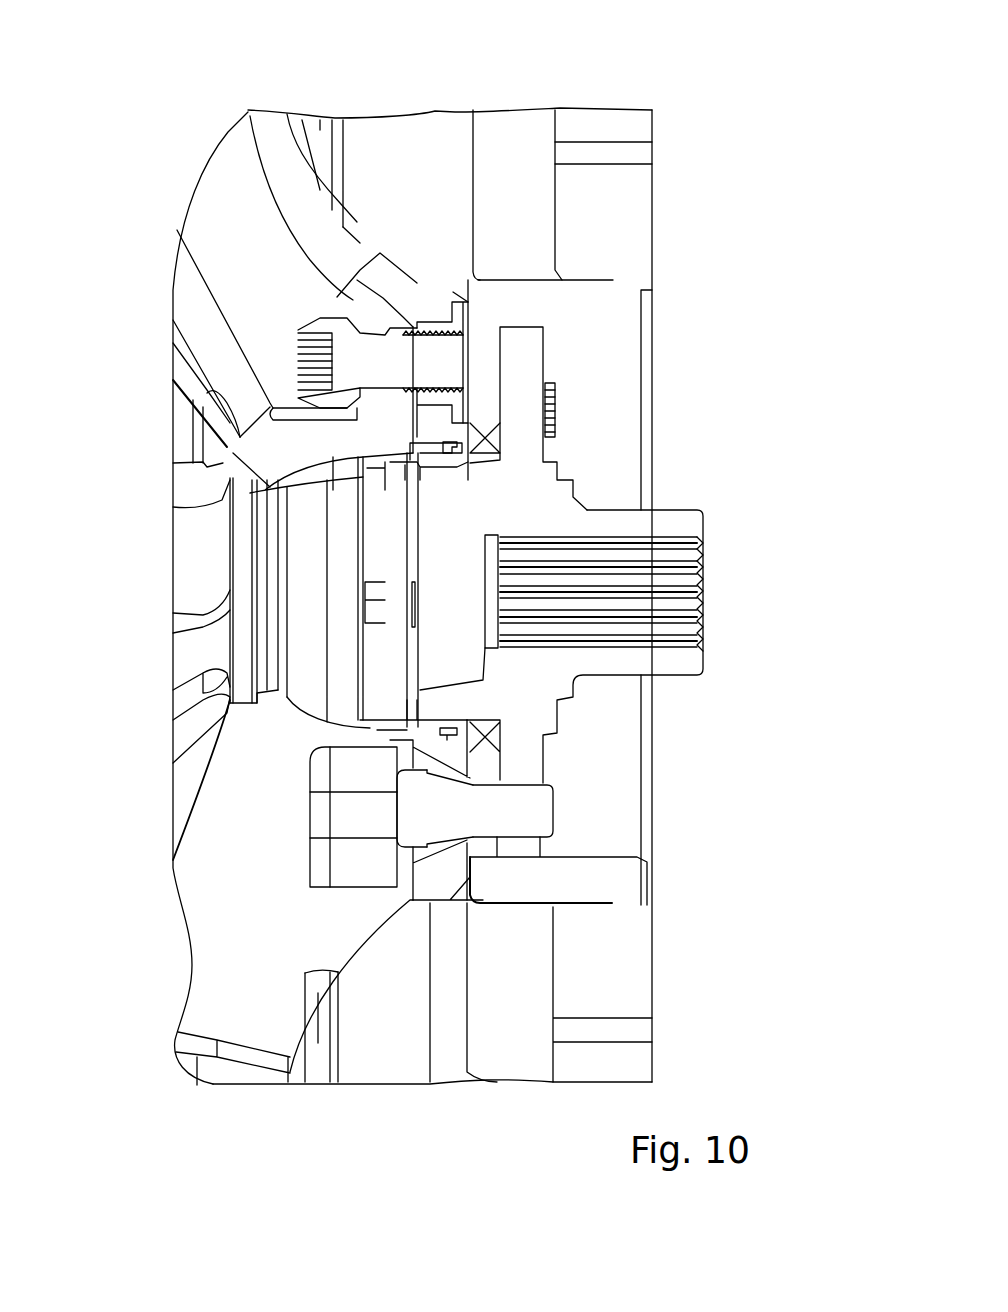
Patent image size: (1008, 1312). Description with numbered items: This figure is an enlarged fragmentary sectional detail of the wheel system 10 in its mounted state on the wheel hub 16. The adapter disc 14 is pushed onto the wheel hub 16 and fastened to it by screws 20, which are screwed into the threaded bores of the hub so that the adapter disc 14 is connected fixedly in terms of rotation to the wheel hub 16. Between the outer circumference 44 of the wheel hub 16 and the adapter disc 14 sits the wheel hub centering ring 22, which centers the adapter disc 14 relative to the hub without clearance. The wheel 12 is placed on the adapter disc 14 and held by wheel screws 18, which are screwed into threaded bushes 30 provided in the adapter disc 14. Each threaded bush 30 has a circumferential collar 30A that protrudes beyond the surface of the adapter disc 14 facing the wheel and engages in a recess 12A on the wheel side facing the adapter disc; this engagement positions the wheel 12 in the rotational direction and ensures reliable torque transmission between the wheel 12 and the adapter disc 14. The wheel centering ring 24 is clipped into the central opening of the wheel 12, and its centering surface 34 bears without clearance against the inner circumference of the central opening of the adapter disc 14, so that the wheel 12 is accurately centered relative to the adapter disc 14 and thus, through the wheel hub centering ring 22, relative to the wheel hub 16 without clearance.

The wheel system 10 is at (604, 92).
The wheel 12 is at (373, 117).
The recess 12A is at (410, 327).
The adapter disc 14 is at (453, 292).
The wheel hub 16 is at (687, 520).
The wheel screw 18 is at (325, 318).
The screw 20 is at (443, 817).
The wheel hub centering ring 22 is at (468, 455).
The wheel centering ring 24 is at (372, 530).
The threaded bush 30 is at (462, 315).
The collar 30A is at (407, 393).
The centering surface 34 is at (428, 438).
The outer circumference 44 is at (453, 464).